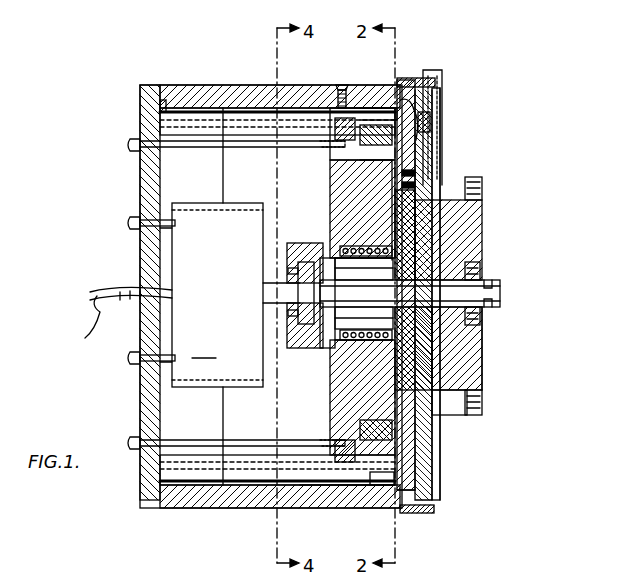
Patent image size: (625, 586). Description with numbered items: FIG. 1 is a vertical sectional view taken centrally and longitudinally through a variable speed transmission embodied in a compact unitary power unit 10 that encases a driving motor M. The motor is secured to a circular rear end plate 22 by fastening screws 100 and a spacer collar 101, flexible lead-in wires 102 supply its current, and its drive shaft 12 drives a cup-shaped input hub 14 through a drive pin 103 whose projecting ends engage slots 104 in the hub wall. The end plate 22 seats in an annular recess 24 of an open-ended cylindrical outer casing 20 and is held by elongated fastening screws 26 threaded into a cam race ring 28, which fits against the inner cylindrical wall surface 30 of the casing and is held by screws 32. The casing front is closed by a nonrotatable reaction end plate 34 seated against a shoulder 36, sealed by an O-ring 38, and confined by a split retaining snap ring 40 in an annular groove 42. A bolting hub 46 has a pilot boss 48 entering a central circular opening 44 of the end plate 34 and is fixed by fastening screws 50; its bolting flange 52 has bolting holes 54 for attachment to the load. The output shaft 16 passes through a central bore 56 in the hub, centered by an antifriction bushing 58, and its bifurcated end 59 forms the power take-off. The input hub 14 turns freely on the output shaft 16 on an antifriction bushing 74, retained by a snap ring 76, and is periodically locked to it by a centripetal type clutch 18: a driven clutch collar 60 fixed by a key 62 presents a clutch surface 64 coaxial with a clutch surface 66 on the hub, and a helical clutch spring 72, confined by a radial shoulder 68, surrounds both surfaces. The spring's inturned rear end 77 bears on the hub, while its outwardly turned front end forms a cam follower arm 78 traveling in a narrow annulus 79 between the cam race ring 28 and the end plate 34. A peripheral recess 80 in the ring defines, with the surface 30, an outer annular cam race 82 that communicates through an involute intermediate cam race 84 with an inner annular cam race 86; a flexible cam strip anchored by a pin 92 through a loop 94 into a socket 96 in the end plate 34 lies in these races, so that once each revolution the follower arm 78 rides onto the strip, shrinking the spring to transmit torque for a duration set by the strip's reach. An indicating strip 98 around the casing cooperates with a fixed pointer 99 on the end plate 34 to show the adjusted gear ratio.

The unitary power unit 10 is at (262, 74).
The drive shaft 12 is at (268, 298).
The input hub 14 is at (288, 240).
The output shaft 16 is at (430, 303).
The centripetal type clutch 18 is at (326, 238).
The outer casing 20 is at (226, 85).
The end plate 22 is at (140, 95).
The annular recess 24 is at (165, 98).
The fastening screws 26 is at (236, 148).
The cam race ring 28 is at (332, 160).
The inner cylindrical wall surface 30 is at (246, 112).
The screws 32 is at (342, 85).
The reaction end plate 34 is at (442, 200).
The shoulder 36 is at (398, 285).
The O-ring 38 is at (436, 100).
The split retaining snap ring 40 is at (440, 476).
The annular groove 42 is at (430, 120).
The central circular opening 44 is at (404, 258).
The bolting hub 46 is at (476, 358).
The pilot boss 48 is at (484, 370).
The fastening screws 50 is at (458, 235).
The bolting flange 52 is at (484, 182).
The bolting holes 54 is at (484, 194).
The central bore 56 is at (420, 326).
The antifriction bushing 58 is at (480, 266).
The bifurcated end 59 is at (500, 296).
The driven clutch collar 60 is at (346, 358).
The key 62 is at (370, 272).
The clutch surface 64 is at (358, 260).
The clutch surface 66 is at (348, 338).
The radial shoulder 68 is at (342, 240).
The helical clutch spring 72 is at (338, 242).
The antifriction bushing 74 is at (352, 318).
The snap ring 76 is at (316, 345).
The inturned rear end 77 is at (318, 262).
The cam follower arm 78 is at (330, 270).
The annulus 79 is at (388, 168).
The peripheral recess 80 is at (380, 482).
The outer annular cam race 82 is at (360, 500).
The involute intermediate cam race 84 is at (340, 138).
The inner annular cam race 86 is at (362, 142).
The pin 92 is at (432, 138).
The loop 94 is at (372, 108).
The socket 96 is at (428, 150).
The indicating strip 98 is at (408, 78).
The fixed pointer 99 is at (432, 70).
The fastening screws 100 is at (150, 240).
The spacer collar 101 is at (150, 214).
The flexible lead-in wires 102 is at (120, 296).
The drive pin 103 is at (288, 312).
The slots 104 is at (288, 272).